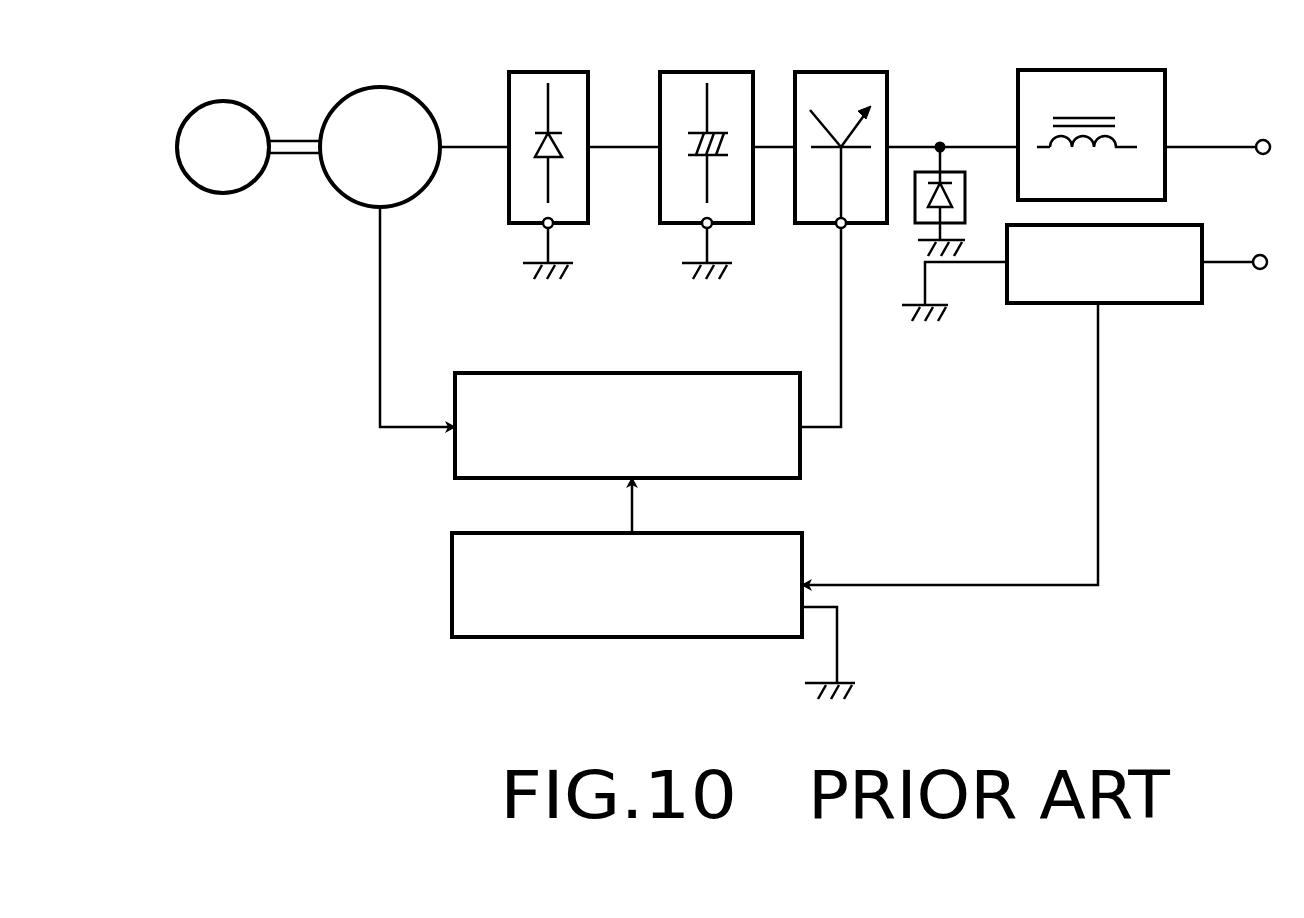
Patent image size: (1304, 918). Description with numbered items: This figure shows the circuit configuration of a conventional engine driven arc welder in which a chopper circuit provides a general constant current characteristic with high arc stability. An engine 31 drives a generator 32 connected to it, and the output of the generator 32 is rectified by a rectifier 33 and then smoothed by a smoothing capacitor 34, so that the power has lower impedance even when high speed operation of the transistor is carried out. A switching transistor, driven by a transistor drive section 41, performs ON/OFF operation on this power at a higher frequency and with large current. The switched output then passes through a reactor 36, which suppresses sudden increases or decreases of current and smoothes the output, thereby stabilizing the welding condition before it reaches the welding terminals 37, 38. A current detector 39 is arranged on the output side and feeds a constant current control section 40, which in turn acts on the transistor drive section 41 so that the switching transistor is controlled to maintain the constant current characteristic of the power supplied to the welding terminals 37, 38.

The engine 31 is at (223, 99).
The generator 32 is at (379, 88).
The rectifier 33 is at (534, 72).
The smoothing capacitor 34 is at (700, 72).
The reactor 36 is at (1082, 70).
The welding terminal 37 is at (1258, 139).
The welding terminal 38 is at (1260, 270).
The current detector 39 is at (1170, 305).
The constant current control section 40 is at (452, 582).
The transistor drive section 41 is at (455, 470).